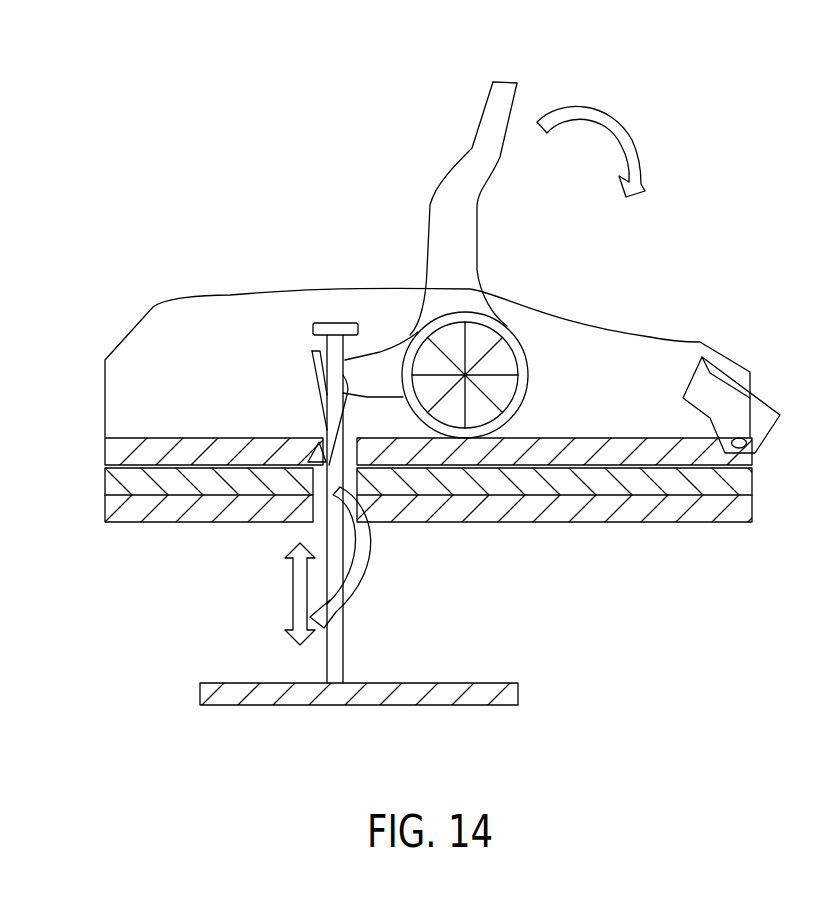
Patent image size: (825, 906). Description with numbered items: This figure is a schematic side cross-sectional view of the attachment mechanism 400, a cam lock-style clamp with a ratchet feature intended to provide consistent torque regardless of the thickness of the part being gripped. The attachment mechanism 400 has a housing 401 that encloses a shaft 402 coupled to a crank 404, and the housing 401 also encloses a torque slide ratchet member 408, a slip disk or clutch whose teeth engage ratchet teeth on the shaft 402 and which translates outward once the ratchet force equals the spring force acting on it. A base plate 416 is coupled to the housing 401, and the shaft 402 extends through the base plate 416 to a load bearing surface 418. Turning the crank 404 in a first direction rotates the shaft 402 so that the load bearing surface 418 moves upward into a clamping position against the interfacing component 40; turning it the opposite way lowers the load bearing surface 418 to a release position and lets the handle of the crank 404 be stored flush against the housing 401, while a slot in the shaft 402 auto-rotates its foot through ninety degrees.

The attachment mechanism 400 is at (442, 267).
The housing 401 is at (628, 369).
The shaft 402 is at (325, 452).
The crank 404 is at (457, 235).
The torque slide ratchet member 408 is at (318, 437).
The base plate 416 is at (120, 457).
The interfacing component 40 is at (452, 497).
The load bearing surface 418 is at (217, 693).